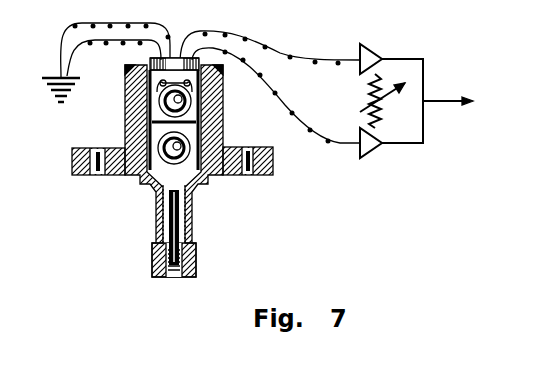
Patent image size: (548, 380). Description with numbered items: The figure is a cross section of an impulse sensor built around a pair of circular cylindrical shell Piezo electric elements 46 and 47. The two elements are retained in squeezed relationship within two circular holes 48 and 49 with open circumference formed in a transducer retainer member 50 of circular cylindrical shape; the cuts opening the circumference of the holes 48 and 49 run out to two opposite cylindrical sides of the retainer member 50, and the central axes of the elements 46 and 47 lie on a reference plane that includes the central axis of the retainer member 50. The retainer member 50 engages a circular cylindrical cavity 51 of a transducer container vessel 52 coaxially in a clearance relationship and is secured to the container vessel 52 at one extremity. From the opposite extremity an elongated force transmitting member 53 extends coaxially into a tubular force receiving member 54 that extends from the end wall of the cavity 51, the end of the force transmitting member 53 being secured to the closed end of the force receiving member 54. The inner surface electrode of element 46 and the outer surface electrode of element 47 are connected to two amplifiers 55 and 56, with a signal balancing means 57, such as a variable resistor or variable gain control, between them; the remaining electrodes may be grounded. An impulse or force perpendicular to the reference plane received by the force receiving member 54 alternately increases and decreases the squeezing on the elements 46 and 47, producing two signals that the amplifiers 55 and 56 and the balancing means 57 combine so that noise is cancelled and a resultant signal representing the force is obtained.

The shell Piezo electric element 46 is at (120, 177).
The shell Piezo electric element 47 is at (222, 100).
The circular hole 48 is at (125, 132).
The circular hole 49 is at (125, 112).
The transducer retainer member 50 is at (143, 193).
The circular cylindrical cavity 51 is at (222, 180).
The transducer container vessel 52 is at (90, 178).
The elongated force transmitting member 53 is at (193, 212).
The tubular force receiving member 54 is at (193, 230).
The amplifier 55 is at (372, 160).
The amplifier 56 is at (378, 50).
The signal balancing means 57 is at (388, 97).